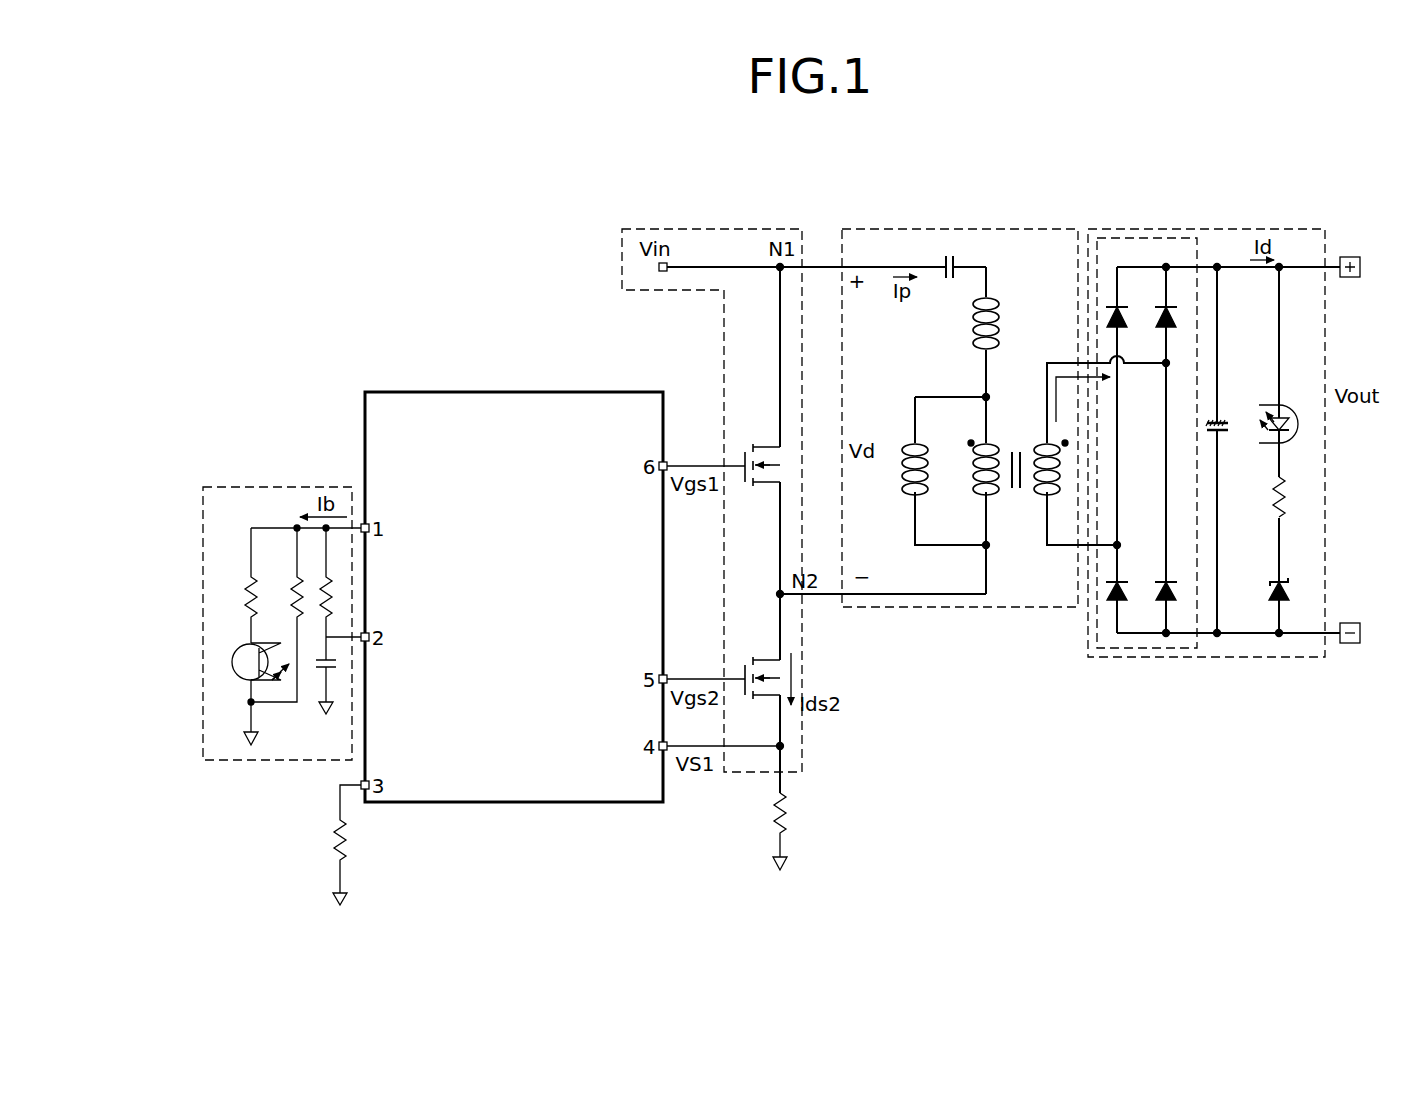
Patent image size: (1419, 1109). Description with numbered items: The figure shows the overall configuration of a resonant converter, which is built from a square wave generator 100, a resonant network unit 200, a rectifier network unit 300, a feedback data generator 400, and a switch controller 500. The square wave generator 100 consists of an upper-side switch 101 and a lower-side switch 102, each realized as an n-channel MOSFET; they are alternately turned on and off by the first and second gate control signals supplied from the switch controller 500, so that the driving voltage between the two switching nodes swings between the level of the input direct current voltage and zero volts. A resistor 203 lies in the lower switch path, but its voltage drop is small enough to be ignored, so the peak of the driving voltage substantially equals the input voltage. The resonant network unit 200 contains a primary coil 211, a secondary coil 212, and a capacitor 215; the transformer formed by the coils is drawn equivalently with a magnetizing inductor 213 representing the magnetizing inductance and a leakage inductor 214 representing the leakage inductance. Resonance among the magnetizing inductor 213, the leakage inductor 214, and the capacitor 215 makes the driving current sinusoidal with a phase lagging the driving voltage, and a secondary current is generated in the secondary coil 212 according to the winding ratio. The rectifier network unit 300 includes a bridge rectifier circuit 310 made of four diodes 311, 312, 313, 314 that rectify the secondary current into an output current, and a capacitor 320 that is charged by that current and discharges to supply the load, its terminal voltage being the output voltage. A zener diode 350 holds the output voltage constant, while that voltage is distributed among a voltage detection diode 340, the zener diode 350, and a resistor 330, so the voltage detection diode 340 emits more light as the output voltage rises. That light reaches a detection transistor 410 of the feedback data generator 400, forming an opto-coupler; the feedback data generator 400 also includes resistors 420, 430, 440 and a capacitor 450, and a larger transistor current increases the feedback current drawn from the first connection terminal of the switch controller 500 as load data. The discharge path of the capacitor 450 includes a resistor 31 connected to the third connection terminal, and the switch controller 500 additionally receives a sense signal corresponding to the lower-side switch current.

The square wave generator 100 is at (758, 229).
The upper-side switch 101 is at (748, 443).
The lower-side switch 102 is at (748, 656).
The resonant network unit 200 is at (1021, 229).
The resistor 203 is at (772, 820).
The primary coil 211 is at (972, 490).
The secondary coil 212 is at (1040, 492).
The magnetizing inductor 213 is at (900, 490).
The leakage inductor 214 is at (972, 341).
The capacitor 215 is at (950, 256).
The rectifier network unit 300 is at (1262, 229).
The bridge rectifier circuit 310 is at (1145, 238).
The diode 311 is at (1126, 318).
The diode 312 is at (1175, 318).
The diode 313 is at (1127, 592).
The diode 314 is at (1176, 592).
The capacitor 320 is at (1210, 432).
The resistor 330 is at (1270, 497).
The voltage detection diode 340 is at (1287, 405).
The zener diode 350 is at (1288, 588).
The feedback data generator 400 is at (301, 487).
The detection transistor 410 is at (232, 660).
The resistor 420 is at (240, 593).
The resistor 430 is at (293, 592).
The resistor 440 is at (332, 587).
The capacitor 450 is at (336, 666).
The switch controller 500 is at (546, 392).
The resistor 31 is at (354, 845).